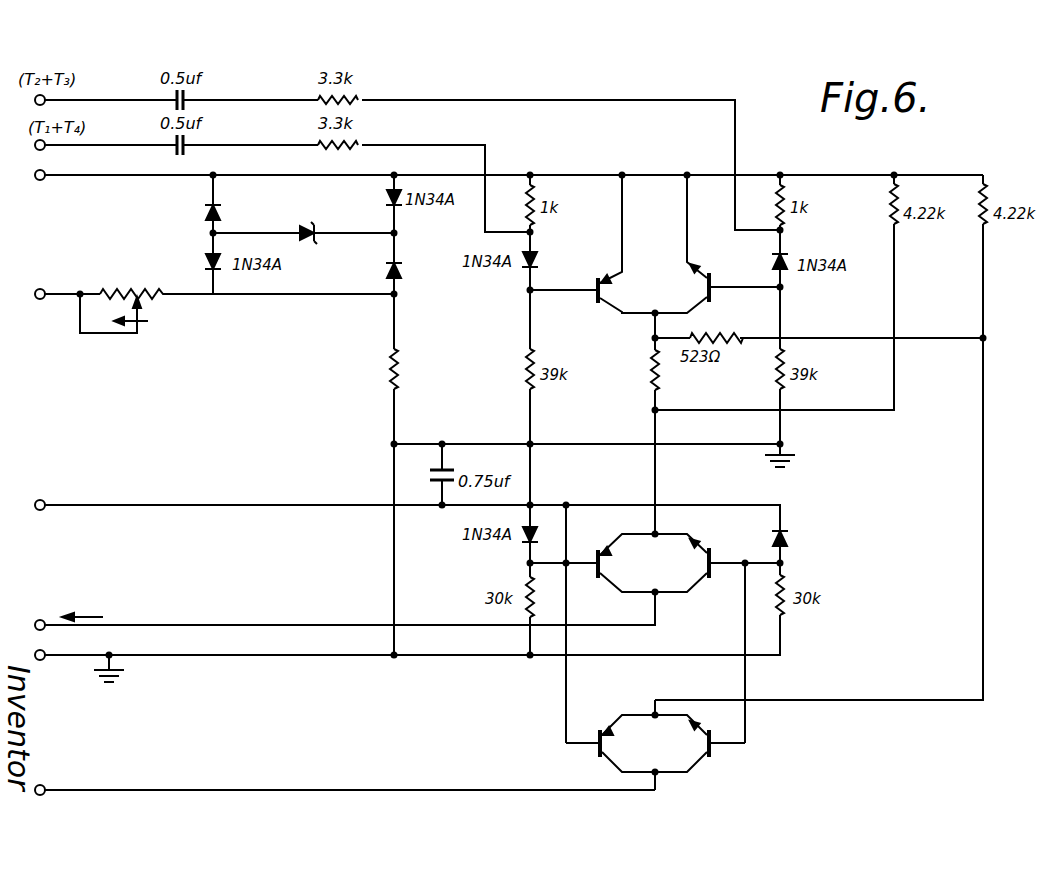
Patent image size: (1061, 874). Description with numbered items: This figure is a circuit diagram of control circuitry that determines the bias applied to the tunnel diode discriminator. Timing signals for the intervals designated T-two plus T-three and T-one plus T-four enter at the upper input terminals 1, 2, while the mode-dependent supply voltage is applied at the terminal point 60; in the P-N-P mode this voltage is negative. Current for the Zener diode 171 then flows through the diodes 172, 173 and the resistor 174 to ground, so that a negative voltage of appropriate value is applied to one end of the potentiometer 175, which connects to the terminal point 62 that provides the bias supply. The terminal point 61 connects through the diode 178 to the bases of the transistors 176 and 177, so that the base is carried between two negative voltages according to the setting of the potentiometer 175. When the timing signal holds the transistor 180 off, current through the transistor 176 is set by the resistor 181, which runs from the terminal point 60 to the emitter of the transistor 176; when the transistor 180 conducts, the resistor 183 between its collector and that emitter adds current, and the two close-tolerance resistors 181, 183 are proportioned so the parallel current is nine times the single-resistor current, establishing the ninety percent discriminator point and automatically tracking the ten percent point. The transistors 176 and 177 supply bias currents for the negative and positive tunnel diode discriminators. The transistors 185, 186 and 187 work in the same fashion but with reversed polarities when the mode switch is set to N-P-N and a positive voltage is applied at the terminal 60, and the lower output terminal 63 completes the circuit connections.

The input terminal (T2+T3) 1 is at (33, 103).
The input terminal (T1+T4) 2 is at (33, 146).
The terminal point 60 is at (38, 181).
The terminal point 61 is at (44, 500).
The terminal point 62 is at (38, 300).
The output terminal 63 is at (44, 785).
The Zener diode 171 is at (305, 224).
The diode 172 is at (204, 213).
The diode 173 is at (403, 270).
The resistor 174 is at (387, 378).
The potentiometer 175 is at (152, 274).
The transistor 176 is at (712, 557).
The transistor 177 is at (712, 752).
The diode 178 is at (790, 540).
The transistor 180 is at (712, 280).
The resistor 181 is at (886, 214).
The resistor 183 is at (648, 370).
The transistor 185 is at (600, 270).
The transistor 186 is at (603, 545).
The transistor 187 is at (595, 740).